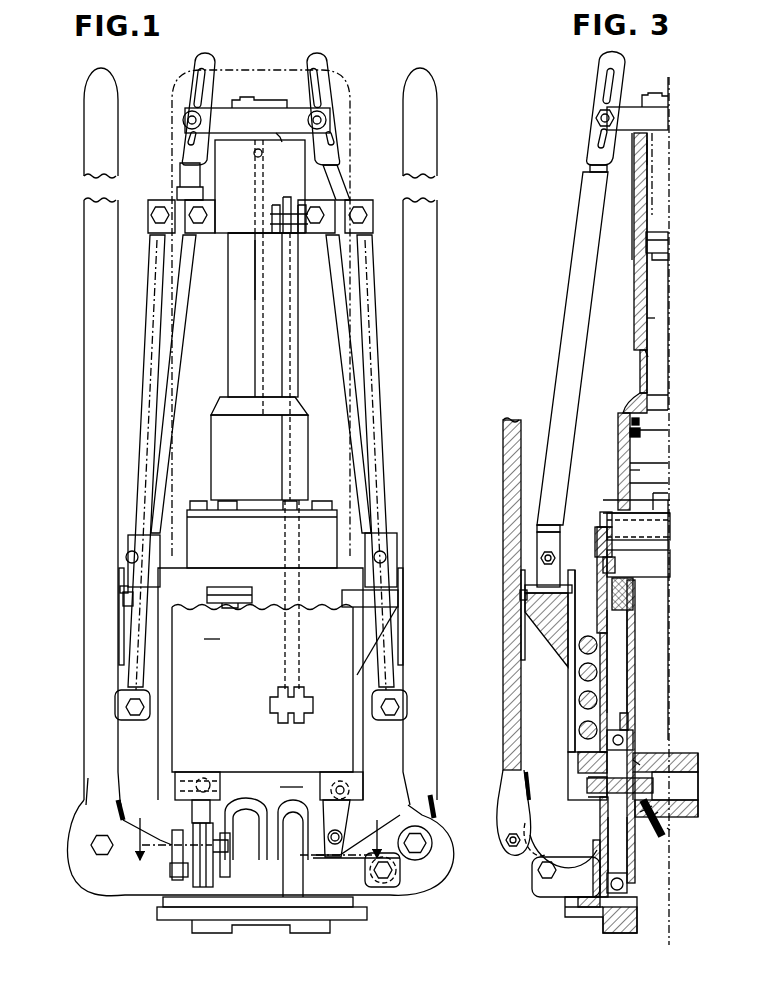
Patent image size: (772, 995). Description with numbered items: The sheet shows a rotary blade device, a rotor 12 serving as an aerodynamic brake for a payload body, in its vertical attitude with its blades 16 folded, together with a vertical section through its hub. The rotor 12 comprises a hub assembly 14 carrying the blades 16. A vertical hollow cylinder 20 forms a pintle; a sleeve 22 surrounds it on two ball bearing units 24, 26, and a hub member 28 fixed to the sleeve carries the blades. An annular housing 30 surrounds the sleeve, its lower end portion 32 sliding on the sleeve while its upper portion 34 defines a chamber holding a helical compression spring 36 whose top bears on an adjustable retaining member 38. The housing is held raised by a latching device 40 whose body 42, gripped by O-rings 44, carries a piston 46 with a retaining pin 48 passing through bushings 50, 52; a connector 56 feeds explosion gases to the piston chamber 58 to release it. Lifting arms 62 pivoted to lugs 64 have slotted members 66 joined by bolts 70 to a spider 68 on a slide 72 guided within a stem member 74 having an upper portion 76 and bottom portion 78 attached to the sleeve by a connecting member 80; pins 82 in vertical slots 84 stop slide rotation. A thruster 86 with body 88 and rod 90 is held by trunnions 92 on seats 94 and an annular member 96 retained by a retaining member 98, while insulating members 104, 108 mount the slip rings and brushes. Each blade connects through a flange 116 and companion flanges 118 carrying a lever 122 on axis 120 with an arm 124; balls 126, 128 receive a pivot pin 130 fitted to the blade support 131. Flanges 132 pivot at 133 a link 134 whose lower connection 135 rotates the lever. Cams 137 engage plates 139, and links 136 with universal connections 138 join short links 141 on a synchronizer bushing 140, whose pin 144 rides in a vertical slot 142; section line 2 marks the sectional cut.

In FIG. 1, the rotor 12 is at (78, 355).
In FIG. 1, the hub assembly 14 is at (158, 762).
In FIG. 3, the hub assembly 14 is at (580, 817).
In FIG. 1, the blades 16 is at (85, 380).
In FIG. 3, the blades 16 is at (503, 522).
In FIG. 3, the cylinder 20 is at (637, 873).
In FIG. 3, the sleeve 22 is at (600, 812).
In FIG. 3, the ball bearing unit 24 is at (635, 727).
In FIG. 3, the ball bearing unit 26 is at (640, 900).
In FIG. 1, the hub member 28 is at (125, 885).
In FIG. 1, the housing 30 is at (360, 760).
In FIG. 3, the housing 30 is at (568, 727).
In FIG. 3, the lower end portion 32 is at (570, 773).
In FIG. 3, the upper portion 34 is at (568, 690).
In FIG. 3, the helical compression spring 36 is at (600, 672).
In FIG. 3, the retaining member 38 is at (597, 633).
In FIG. 3, the latching device 40 is at (665, 763).
In FIG. 3, the body 42 is at (673, 755).
In FIG. 3, the O-rings 44 is at (640, 760).
In FIG. 3, the piston 46 is at (660, 838).
In FIG. 3, the retaining pin 48 is at (610, 783).
In FIG. 3, the bushing 50 is at (614, 847).
In FIG. 3, the bushing 52 is at (590, 785).
In FIG. 3, the connector 56 is at (664, 838).
In FIG. 3, the piston chamber 58 is at (686, 830).
In FIG. 1, the lifting arms 62 is at (176, 195).
In FIG. 3, the lifting arms 62 is at (583, 268).
In FIG. 1, the lug 64 is at (124, 603).
In FIG. 3, the lug 64 is at (527, 605).
In FIG. 1, the slotted member 66 is at (196, 62).
In FIG. 3, the slotted member 66 is at (604, 62).
In FIG. 1, the spider 68 is at (232, 108).
In FIG. 3, the spider 68 is at (636, 107).
In FIG. 1, the bolt 70 is at (184, 120).
In FIG. 3, the bolt 70 is at (597, 118).
In FIG. 1, the slide 72 is at (282, 140).
In FIG. 3, the slide 72 is at (632, 140).
In FIG. 1, the stem member 74 is at (231, 362).
In FIG. 1, the upper portion 76 is at (232, 248).
In FIG. 3, the upper portion 76 is at (640, 283).
In FIG. 1, the bottom portion 78 is at (218, 444).
In FIG. 3, the bottom portion 78 is at (622, 450).
In FIG. 1, the connecting member 80 is at (188, 530).
In FIG. 3, the connecting member 80 is at (596, 538).
In FIG. 3, the pins 82 is at (647, 152).
In FIG. 3, the vertical slots 84 is at (652, 205).
In FIG. 3, the thruster 86 is at (641, 358).
In FIG. 3, the body 88 is at (655, 318).
In FIG. 3, the rod 90 is at (650, 238).
In FIG. 3, the trunnions 92 is at (634, 421).
In FIG. 3, the seat 94 is at (632, 396).
In FIG. 3, the annular member 96 is at (636, 434).
In FIG. 3, the retaining member 98 is at (627, 470).
In FIG. 3, the electrical insulating member 104 is at (615, 567).
In FIG. 3, the electrical insulating member 108 is at (633, 588).
In FIG. 1, the blade connecting flange 116 is at (85, 840).
In FIG. 1, the blade connecting flanges 118 is at (385, 878).
In FIG. 3, the blade connecting flanges 118 is at (547, 887).
In FIG. 1, the horizontal axis 120 is at (222, 870).
In FIG. 1, the lever 122 is at (200, 845).
In FIG. 3, the lever 122 is at (527, 860).
In FIG. 1, the arm 124 is at (335, 845).
In FIG. 1, the ball 126 is at (290, 862).
In FIG. 1, the ball 128 is at (210, 830).
In FIG. 1, the pivot pin 130 is at (228, 838).
In FIG. 1, the blade support 131 is at (95, 790).
In FIG. 3, the blade support 131 is at (500, 805).
In FIG. 1, the flanges 132 is at (185, 775).
In FIG. 1, the pivotal connection 133 is at (210, 783).
In FIG. 1, the link 134 is at (192, 808).
In FIG. 1, the connection 135 is at (330, 848).
In FIG. 1, the link 136 is at (157, 318).
In FIG. 1, the cams 137 is at (122, 590).
In FIG. 3, the cams 137 is at (525, 582).
In FIG. 1, the universal connection 138 is at (133, 718).
In FIG. 1, the plate 139 is at (118, 625).
In FIG. 3, the plate 139 is at (527, 650).
In FIG. 1, the synchronizer bushing 140 is at (214, 170).
In FIG. 3, the synchronizer bushing 140 is at (633, 183).
In FIG. 1, the links 141 is at (362, 214).
In FIG. 1, the vertical slot 142 is at (256, 285).
In FIG. 1, the pin 144 is at (256, 156).
In FIG. 1, the section line 2 is at (260, 829).